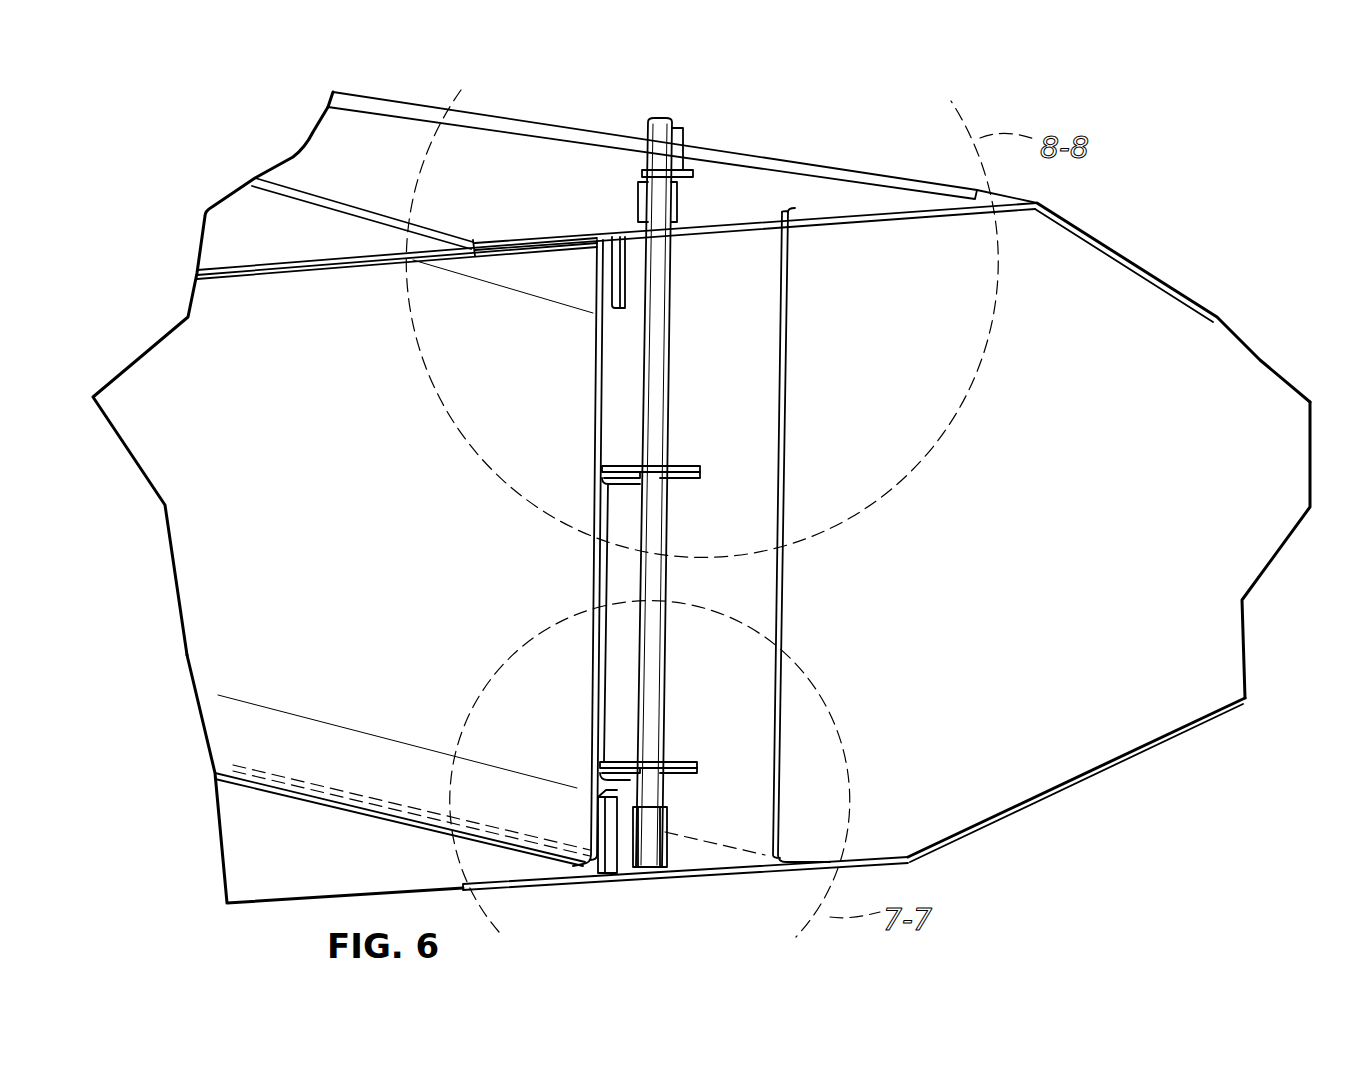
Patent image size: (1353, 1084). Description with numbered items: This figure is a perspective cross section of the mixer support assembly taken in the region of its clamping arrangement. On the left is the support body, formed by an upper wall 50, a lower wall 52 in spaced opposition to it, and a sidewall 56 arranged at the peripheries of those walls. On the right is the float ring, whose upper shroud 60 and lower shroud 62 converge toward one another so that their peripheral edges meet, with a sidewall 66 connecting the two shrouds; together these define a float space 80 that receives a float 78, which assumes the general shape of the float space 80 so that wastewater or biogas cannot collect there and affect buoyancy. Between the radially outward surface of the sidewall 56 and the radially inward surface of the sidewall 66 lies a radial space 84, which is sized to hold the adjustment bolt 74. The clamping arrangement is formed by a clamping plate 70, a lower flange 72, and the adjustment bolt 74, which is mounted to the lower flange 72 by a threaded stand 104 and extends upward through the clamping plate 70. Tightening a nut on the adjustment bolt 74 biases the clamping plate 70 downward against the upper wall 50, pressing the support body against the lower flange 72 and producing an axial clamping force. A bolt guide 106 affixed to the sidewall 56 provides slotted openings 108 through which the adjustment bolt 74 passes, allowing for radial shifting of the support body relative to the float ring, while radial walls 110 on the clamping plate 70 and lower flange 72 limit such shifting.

The upper wall 50 is at (238, 212).
The lower wall 52 is at (248, 863).
The sidewall 56 is at (560, 335).
The upper shroud 60 is at (1103, 240).
The lower shroud 62 is at (1075, 773).
The sidewall 66 is at (747, 597).
The clamping plate 70 is at (323, 148).
The lower flange 72 is at (545, 887).
The adjustment bolt 74 is at (673, 366).
The float 78 is at (1185, 318).
The float space 80 is at (1065, 528).
The radial space 84 is at (720, 266).
The threaded stand 104 is at (667, 853).
The bolt guide 106 is at (703, 470).
The slotted opening 108 is at (683, 478).
The radial wall 110 is at (628, 262).